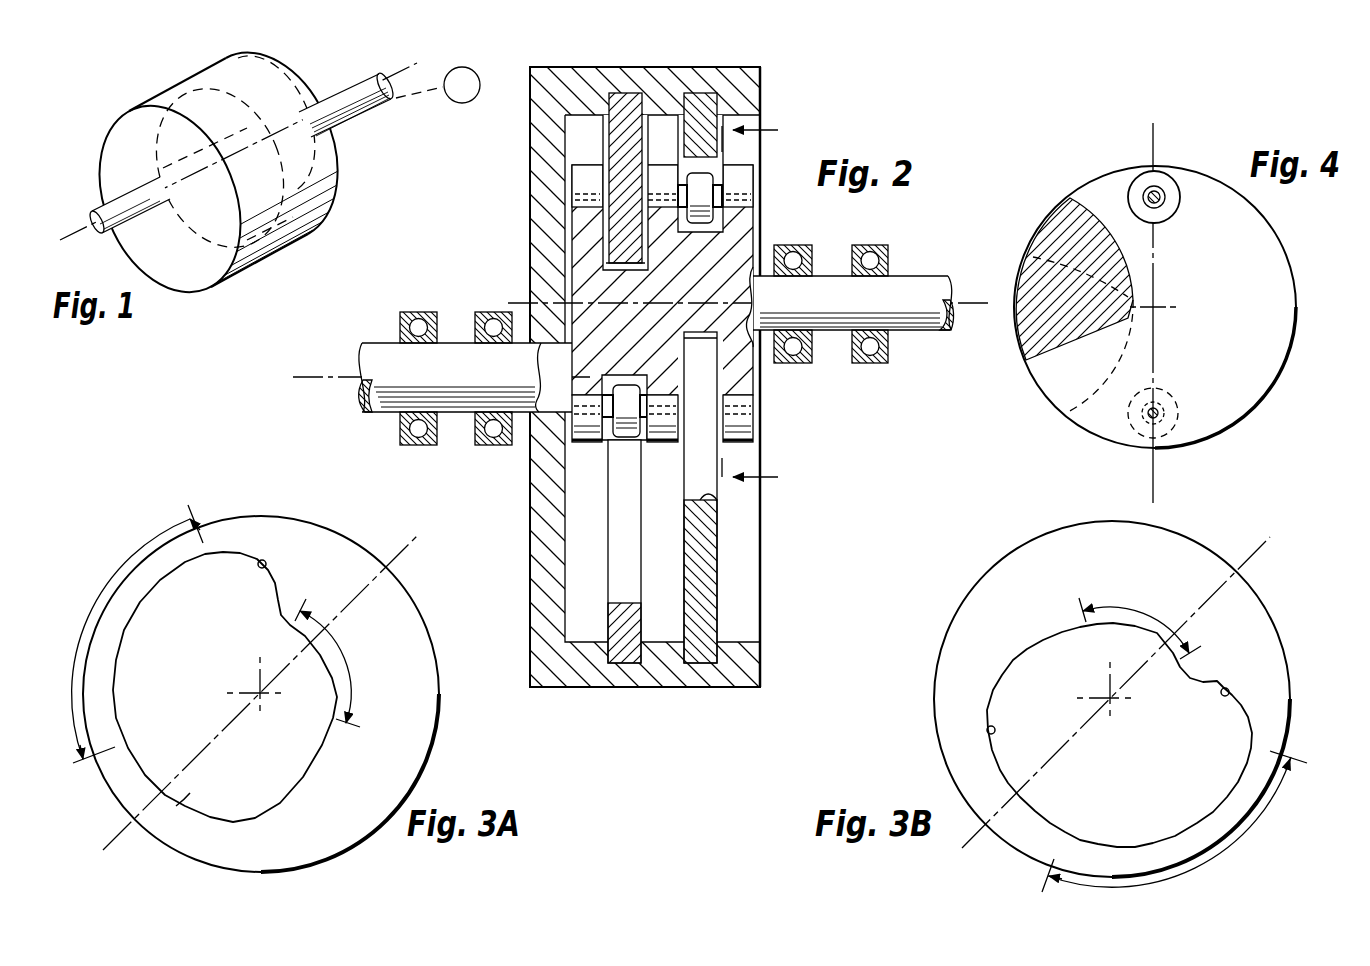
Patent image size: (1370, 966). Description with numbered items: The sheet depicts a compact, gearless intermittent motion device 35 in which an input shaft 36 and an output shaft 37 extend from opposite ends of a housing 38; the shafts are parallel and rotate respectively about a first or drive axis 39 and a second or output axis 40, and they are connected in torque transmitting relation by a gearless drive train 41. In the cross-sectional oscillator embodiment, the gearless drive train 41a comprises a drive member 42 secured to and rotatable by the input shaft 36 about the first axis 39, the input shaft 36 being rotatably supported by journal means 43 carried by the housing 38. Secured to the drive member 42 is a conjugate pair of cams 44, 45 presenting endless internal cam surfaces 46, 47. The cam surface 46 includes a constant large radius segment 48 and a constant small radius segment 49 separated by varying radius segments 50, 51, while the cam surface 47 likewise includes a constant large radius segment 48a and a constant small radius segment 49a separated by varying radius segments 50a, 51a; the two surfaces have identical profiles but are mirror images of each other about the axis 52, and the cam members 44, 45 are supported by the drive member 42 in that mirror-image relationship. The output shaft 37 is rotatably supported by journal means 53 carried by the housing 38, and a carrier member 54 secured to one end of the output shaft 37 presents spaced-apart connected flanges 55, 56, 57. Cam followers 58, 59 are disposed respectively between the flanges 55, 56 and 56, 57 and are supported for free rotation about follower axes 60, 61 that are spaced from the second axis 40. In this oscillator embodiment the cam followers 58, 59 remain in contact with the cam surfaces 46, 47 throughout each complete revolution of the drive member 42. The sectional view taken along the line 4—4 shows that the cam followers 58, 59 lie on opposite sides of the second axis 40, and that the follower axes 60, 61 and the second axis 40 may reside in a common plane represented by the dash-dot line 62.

In FIG. 1, the gearless intermittent motion device 35 is at (137, 80).
In FIG. 1, the input shaft 36 is at (348, 89).
In FIG. 2, the input shaft 36 is at (375, 342).
In FIG. 1, the output shaft 37 is at (102, 206).
In FIG. 2, the output shaft 37 is at (912, 276).
In FIG. 1, the housing 38 is at (205, 68).
In FIG. 1, the first or drive axis 39 is at (400, 73).
In FIG. 2, the first or drive axis 39 is at (328, 376).
In FIG. 1, the second or output axis 40 is at (76, 236).
In FIG. 2, the second or output axis 40 is at (964, 302).
In FIG. 4, the second or output axis 40 is at (1156, 306).
In FIG. 1, the gearless drive train 41 is at (254, 58).
In FIG. 2, the gearless drive train 41a is at (776, 76).
In FIG. 2, the drive member 42 is at (527, 537).
In FIG. 2, the journal means 43 is at (492, 311).
In FIG. 2, the cam 44 is at (700, 93).
In FIG. 3A, the cam 44 is at (260, 514).
In FIG. 2, the cam 45 is at (625, 93).
In FIG. 3B, the cam 45 is at (1203, 542).
In FIG. 2, the internal cam surface 46 is at (711, 497).
In FIG. 3A, the internal cam surface 46 is at (310, 758).
In FIG. 2, the internal cam surface 47 is at (626, 603).
In FIG. 3B, the internal cam surface 47 is at (1035, 655).
In FIG. 3A, the constant large radius segment 48 is at (110, 580).
In FIG. 3B, the constant large radius segment 48a is at (1220, 852).
In FIG. 3A, the constant small radius segment 49 is at (345, 658).
In FIG. 3B, the constant small radius segment 49a is at (1148, 612).
In FIG. 3A, the varying radius segment 50 is at (267, 569).
In FIG. 3B, the varying radius segment 50a is at (1226, 688).
In FIG. 3A, the varying radius segment 51 is at (183, 800).
In FIG. 3B, the varying radius segment 51a is at (987, 733).
In FIG. 3A, the axis 52 is at (400, 552).
In FIG. 3B, the axis 52 is at (1250, 559).
In FIG. 2, the journal means 53 is at (870, 244).
In FIG. 2, the carrier member 54 is at (758, 388).
In FIG. 4, the carrier member 54 is at (1219, 163).
In FIG. 2, the flange 55 is at (748, 423).
In FIG. 2, the flange 56 is at (669, 443).
In FIG. 4, the flange 56 is at (1265, 222).
In FIG. 2, the flange 57 is at (594, 443).
In FIG. 2, the cam follower 58 is at (697, 173).
In FIG. 4, the cam follower 58 is at (1165, 177).
In FIG. 2, the cam follower 59 is at (632, 441).
In FIG. 4, the cam follower 59 is at (1127, 443).
In FIG. 2, the follower axis 60 is at (701, 195).
In FIG. 4, the follower axis 60 is at (1164, 204).
In FIG. 2, the follower axis 61 is at (626, 386).
In FIG. 4, the follower axis 61 is at (1165, 405).
In FIG. 4, the dash-dot line 62 is at (1150, 145).
In FIG. 2, the line 4— 4 is at (760, 304).